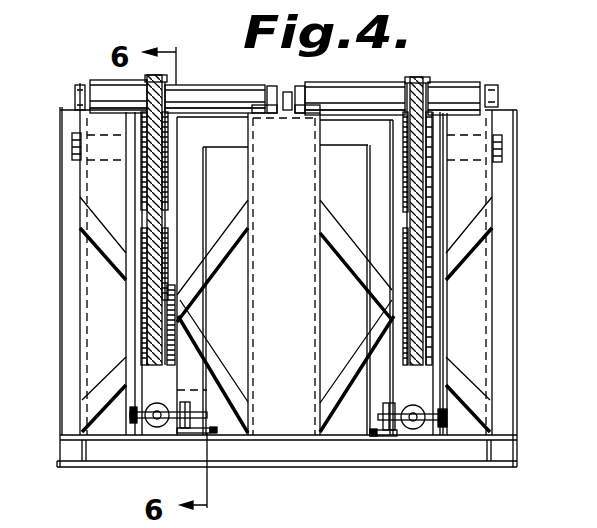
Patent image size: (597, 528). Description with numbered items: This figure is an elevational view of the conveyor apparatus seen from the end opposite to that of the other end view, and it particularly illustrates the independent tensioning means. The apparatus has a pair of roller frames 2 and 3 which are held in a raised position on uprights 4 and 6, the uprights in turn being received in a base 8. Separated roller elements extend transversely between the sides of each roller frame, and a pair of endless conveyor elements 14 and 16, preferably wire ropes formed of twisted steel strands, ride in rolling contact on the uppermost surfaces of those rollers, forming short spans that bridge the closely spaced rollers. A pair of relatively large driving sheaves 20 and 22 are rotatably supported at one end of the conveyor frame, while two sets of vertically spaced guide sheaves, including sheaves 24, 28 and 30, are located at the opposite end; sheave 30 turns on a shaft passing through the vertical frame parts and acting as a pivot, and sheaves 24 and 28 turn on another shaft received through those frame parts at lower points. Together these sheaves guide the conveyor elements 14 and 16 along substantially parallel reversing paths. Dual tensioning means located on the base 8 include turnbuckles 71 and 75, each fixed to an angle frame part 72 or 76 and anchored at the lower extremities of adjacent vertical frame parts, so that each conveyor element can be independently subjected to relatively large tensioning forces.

The roller frame 2 is at (80, 84).
The roller frame 3 is at (500, 85).
The upright 4 is at (503, 275).
The upright 6 is at (62, 292).
The base 8 is at (318, 456).
The endless conveyor element 14 is at (417, 76).
The endless conveyor element 16 is at (153, 72).
The driving sheave 20 is at (430, 83).
The driving sheave 22 is at (167, 193).
The guide sheave 24 is at (432, 238).
The guide sheave 28 is at (167, 243).
The guide sheave 30 is at (180, 112).
The sheave 71 is at (420, 392).
The bracket 72 is at (383, 436).
The sheave 75 is at (162, 405).
The bracket 76 is at (177, 433).